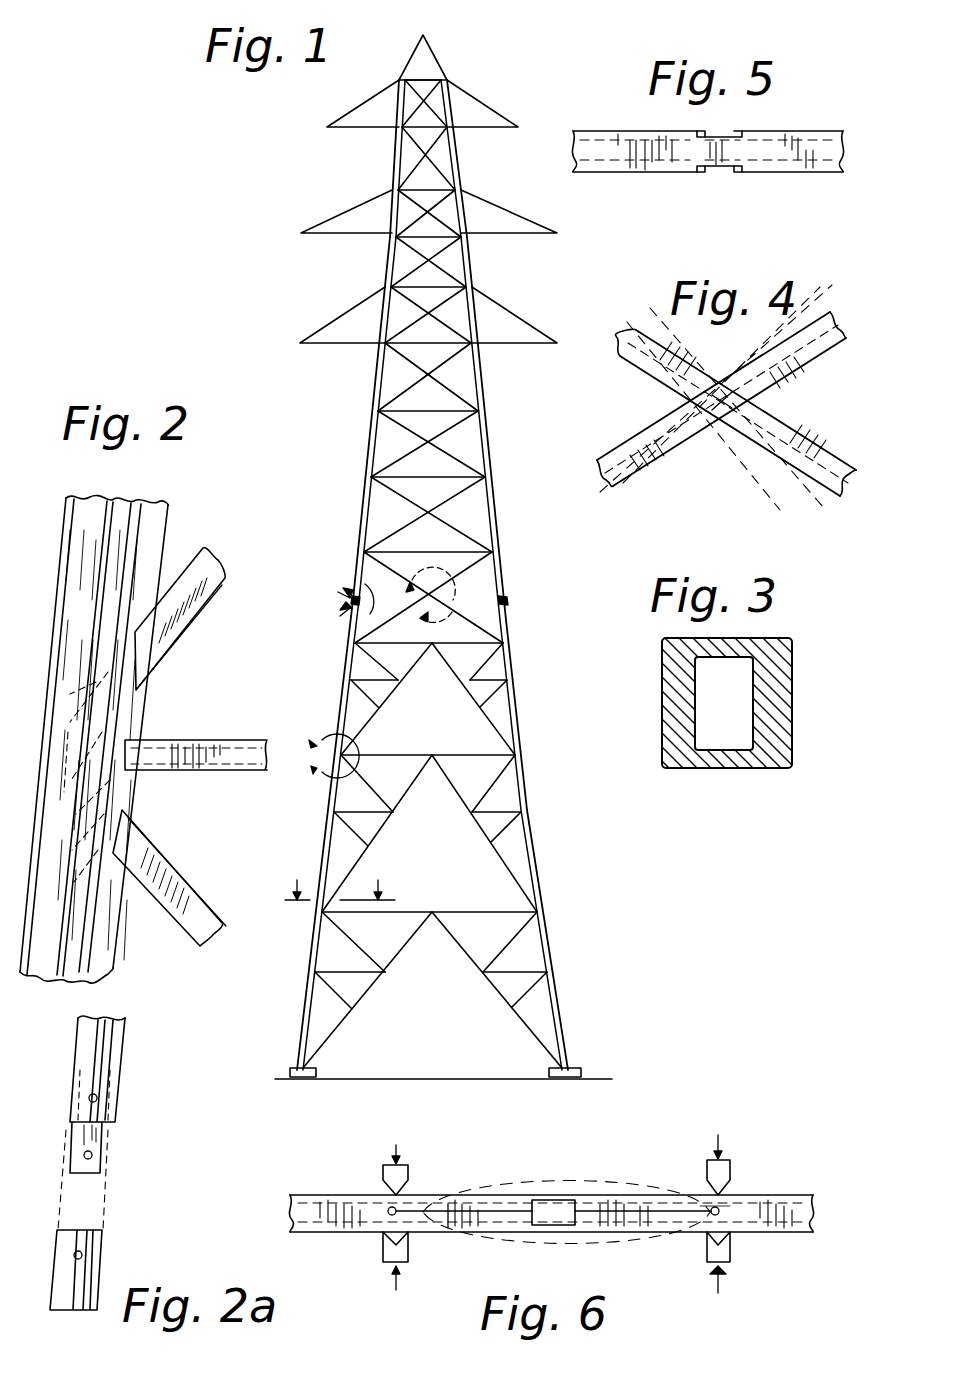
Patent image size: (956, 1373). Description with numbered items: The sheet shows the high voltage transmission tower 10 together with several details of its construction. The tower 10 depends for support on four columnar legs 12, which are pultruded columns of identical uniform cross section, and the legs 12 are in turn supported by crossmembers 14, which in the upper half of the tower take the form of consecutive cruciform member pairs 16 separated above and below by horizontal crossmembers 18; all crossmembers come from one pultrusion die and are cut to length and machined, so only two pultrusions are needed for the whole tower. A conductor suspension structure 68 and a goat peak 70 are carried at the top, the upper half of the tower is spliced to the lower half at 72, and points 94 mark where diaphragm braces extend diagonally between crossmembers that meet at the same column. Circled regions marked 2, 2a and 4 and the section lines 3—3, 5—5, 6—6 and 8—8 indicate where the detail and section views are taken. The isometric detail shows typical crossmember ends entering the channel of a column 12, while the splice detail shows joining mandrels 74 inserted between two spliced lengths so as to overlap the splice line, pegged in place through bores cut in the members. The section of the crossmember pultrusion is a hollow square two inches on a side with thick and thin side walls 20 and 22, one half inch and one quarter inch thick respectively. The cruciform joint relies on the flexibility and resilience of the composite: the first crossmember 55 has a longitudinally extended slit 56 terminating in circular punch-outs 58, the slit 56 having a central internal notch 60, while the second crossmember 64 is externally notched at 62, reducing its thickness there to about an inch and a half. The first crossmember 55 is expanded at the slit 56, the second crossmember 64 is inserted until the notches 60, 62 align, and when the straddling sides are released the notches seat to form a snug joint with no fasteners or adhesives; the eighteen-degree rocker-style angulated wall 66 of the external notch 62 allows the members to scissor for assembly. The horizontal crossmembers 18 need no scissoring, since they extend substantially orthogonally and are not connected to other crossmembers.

In FIG. 1, the high voltage transmission tower 10 is at (294, 191).
In FIG. 1, the columnar legs 12 is at (372, 445).
In FIG. 2, the columnar legs 12 is at (52, 660).
In FIG. 2A, the columnar legs 12 is at (78, 1057).
In FIG. 1, the crossmembers 14 is at (393, 532).
In FIG. 1, the cruciform member pairs 16 is at (425, 437).
In FIG. 1, the horizontal crossmembers 18 is at (443, 552).
In FIG. 3, the thick side wall 20 is at (780, 695).
In FIG. 3, the thin side wall 22 is at (730, 768).
In FIG. 1, the section view indicator 2 is at (327, 766).
In FIG. 1, the detail view indicator 2a is at (338, 612).
In FIG. 2, the section line 3— 3 is at (159, 930).
In FIG. 1, the detail view indicator 4 is at (420, 605).
In FIG. 4, the section line 5— 5 is at (592, 432).
In FIG. 4, the section line 6— 6 is at (845, 432).
In FIG. 1, the section line 8- 8 is at (340, 879).
In FIG. 4, the first crossmember 55 is at (660, 383).
In FIG. 6, the first crossmember 55 is at (338, 1152).
In FIG. 6, the longitudinally extended slit 56 is at (488, 1210).
In FIG. 6, the circular punch-outs 58 is at (724, 1208).
In FIG. 6, the central internal notch 60 is at (558, 1214).
In FIG. 5, the external notch 62 is at (722, 137).
In FIG. 5, the second crossmember 64 is at (651, 172).
In FIG. 4, the second crossmember 64 is at (810, 366).
In FIG. 4, the rocker-style angulated wall 66 is at (718, 422).
In FIG. 1, the conductor suspension structure 68 is at (500, 230).
In FIG. 1, the goat peak 70 is at (441, 61).
In FIG. 1, the splice 72 is at (350, 604).
In FIG. 2A, the joining mandrels 74 is at (97, 1143).
In FIG. 1, the diaphragm brace points 94 is at (496, 692).